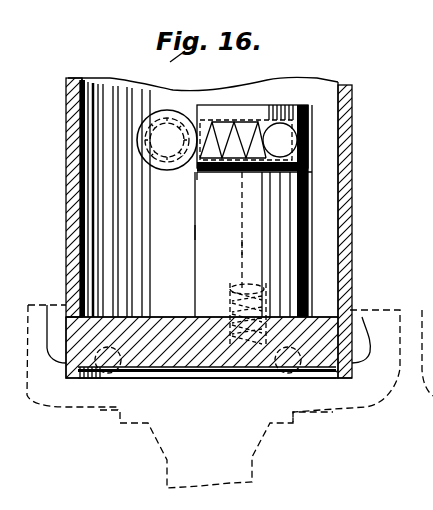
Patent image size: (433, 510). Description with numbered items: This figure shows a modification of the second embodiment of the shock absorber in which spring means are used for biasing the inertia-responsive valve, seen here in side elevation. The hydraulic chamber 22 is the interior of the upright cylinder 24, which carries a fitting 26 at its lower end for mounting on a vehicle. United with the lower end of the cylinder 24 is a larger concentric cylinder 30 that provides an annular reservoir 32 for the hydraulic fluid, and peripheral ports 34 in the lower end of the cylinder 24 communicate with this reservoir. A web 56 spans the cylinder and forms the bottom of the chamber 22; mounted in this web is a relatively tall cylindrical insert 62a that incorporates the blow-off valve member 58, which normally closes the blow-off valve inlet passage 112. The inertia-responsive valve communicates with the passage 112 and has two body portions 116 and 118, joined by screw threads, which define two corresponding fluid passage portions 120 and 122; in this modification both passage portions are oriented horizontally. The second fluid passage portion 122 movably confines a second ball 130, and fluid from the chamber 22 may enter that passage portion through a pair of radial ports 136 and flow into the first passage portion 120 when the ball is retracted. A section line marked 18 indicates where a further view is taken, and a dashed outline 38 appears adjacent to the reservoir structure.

The section line 18- 18 is at (100, 142).
The hydraulic chamber 22 is at (338, 186).
The upright cylinder 24 is at (66, 207).
The fitting 26 is at (165, 468).
The concentric cylinder 30 is at (34, 305).
The annular reservoir 32 is at (362, 320).
The peripheral ports 34 is at (108, 371).
The adjacent support member 38 is at (425, 339).
The web 56 is at (182, 365).
The blow-off valve member 58 is at (235, 284).
The tall cylindrical insert 62a is at (195, 232).
The blow-off valve inlet passage 112 is at (243, 245).
The first valve body portion 116 is at (162, 172).
The second valve body portion 118 is at (268, 120).
The first fluid passage portion 120 is at (166, 112).
The second fluid passage portion 122 is at (213, 130).
The second ball 130 is at (228, 170).
The radial ports 136 is at (210, 173).